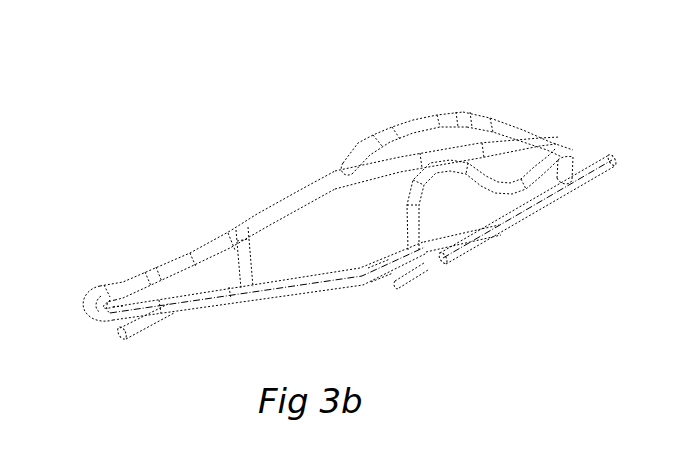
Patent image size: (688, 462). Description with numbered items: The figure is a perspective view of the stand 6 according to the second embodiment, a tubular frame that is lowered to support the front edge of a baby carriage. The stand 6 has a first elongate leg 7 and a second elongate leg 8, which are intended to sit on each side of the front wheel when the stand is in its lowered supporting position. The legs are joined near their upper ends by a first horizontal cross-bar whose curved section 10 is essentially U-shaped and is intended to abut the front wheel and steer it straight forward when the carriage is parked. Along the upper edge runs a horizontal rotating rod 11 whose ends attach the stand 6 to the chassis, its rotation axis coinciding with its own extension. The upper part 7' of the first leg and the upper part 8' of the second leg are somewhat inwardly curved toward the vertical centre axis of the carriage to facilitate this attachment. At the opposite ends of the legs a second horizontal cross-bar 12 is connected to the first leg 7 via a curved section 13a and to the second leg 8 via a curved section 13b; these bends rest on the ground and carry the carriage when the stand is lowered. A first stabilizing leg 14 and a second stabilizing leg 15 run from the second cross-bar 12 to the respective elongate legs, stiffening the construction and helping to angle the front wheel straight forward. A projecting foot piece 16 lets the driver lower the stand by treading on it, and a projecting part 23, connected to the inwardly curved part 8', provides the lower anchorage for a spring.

The stand 6 is at (300, 125).
The first elongate leg 7 is at (518, 101).
The upper part of first elongate leg 7' is at (584, 136).
The second elongate leg 8 is at (305, 304).
The upper part of second elongate leg 8' is at (366, 302).
The curved section 10 is at (450, 170).
The horizontal rotating rod 11 is at (497, 227).
The second horizontal cross-bar 12 is at (257, 215).
The curved section 13a is at (394, 126).
The curved section 13b is at (107, 286).
The first stabilizing leg 14 is at (382, 183).
The second stabilizing leg 15 is at (242, 263).
The projecting foot piece 16 is at (137, 331).
The projecting part 23 is at (417, 273).